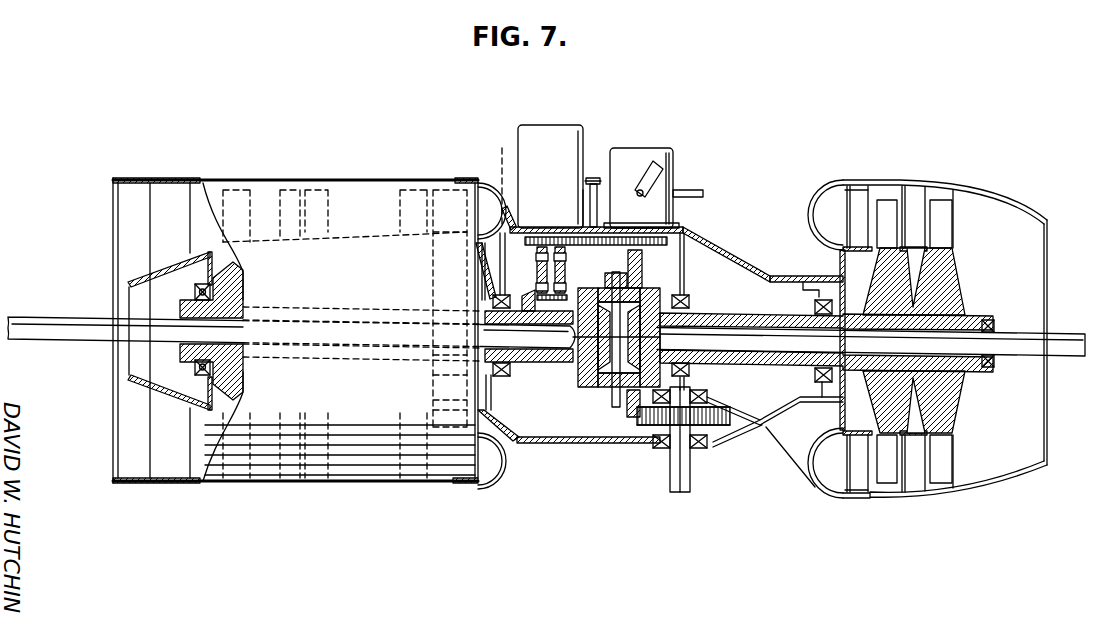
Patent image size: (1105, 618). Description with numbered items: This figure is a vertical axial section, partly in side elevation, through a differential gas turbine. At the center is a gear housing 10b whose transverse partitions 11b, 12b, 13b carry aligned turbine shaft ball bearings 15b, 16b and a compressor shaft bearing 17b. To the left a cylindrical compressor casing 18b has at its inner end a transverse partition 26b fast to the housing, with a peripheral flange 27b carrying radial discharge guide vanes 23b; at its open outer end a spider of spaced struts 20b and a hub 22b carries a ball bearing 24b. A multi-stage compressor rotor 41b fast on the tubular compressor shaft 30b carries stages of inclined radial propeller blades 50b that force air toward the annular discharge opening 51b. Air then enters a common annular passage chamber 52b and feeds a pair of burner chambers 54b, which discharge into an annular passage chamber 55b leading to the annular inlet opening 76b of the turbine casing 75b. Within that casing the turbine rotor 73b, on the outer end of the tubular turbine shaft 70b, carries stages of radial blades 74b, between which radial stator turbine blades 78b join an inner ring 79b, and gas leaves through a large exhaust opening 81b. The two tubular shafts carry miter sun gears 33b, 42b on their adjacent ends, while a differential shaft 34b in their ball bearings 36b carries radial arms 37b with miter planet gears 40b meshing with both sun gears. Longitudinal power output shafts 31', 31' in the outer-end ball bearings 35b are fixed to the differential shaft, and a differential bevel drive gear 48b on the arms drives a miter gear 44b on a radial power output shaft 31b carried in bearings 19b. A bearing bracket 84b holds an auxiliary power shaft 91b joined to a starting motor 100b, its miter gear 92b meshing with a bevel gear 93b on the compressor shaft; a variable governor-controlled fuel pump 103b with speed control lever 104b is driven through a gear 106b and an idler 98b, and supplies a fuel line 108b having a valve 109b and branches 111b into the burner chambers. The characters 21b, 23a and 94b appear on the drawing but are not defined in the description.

The struts 20b is at (165, 226).
The drum housing lower wall 21b is at (122, 438).
The hub 22b is at (135, 281).
The ball bearing 24b is at (195, 292).
The ball bearings 35b is at (195, 365).
The longitudinal power output shafts 31' is at (546, 337).
The peripheral inclined radial propeller blades 50b is at (218, 192).
The multi-stage compressor rotor 41b is at (287, 192).
The blade 23a is at (438, 195).
The cylindrical compressor casing 18b is at (272, 486).
The transverse partition 26b is at (465, 389).
The peripheral flange 27b is at (436, 417).
The annular discharge opening 51b is at (484, 200).
The radial discharge guide vanes 23b is at (433, 474).
The strut 94b is at (480, 246).
The transverse partition 11b is at (500, 275).
The compressor shaft bearing 17b is at (495, 303).
The gear housing 10b is at (690, 242).
The transverse partition 12b is at (683, 258).
The gear 106b is at (688, 233).
The burner chambers 54b is at (776, 262).
The transverse partition 13b is at (818, 283).
The differential bevel drive gear 48b is at (627, 443).
The ball bearings 36b is at (680, 298).
The tubular compressor shaft 30b is at (557, 378).
The bevel gear 93b is at (532, 377).
The turbine shaft ball bearing 16b is at (688, 318).
The differential shaft 34b is at (695, 330).
The miter sun gear 33b is at (594, 390).
The miter planet gears 40b is at (595, 292).
The radial arms 37b is at (617, 400).
The miter sun gear 42b is at (650, 287).
The idler 98b is at (578, 247).
The bearing bracket 84b is at (542, 274).
The auxiliary power shaft 91b is at (541, 285).
The miter gear 92b is at (594, 294).
The radial power output shaft 31b is at (693, 487).
The bearings 19b is at (700, 391).
The miter gear 44b is at (728, 435).
The starting motor 100b is at (545, 132).
The variable governor-controlled fuel pump 103b is at (647, 147).
The speed control lever 104b is at (663, 167).
The fuel line 108b is at (590, 178).
The valve 109b is at (597, 185).
The branches 111b is at (589, 208).
The annular passage chamber 52b is at (502, 179).
The turbine casing 75b is at (983, 195).
The exhaust opening 81b is at (1043, 238).
The annular passage chamber 55b is at (822, 212).
The annular inlet opening 76b is at (768, 255).
The turbine rotor 73b is at (954, 401).
The radial blades 74b is at (886, 202).
The radial stator turbine blades 78b is at (913, 196).
The inner ring 79b is at (912, 244).
The turbine shaft ball bearing 15b is at (815, 305).
The tubular turbine shaft 70b is at (767, 367).